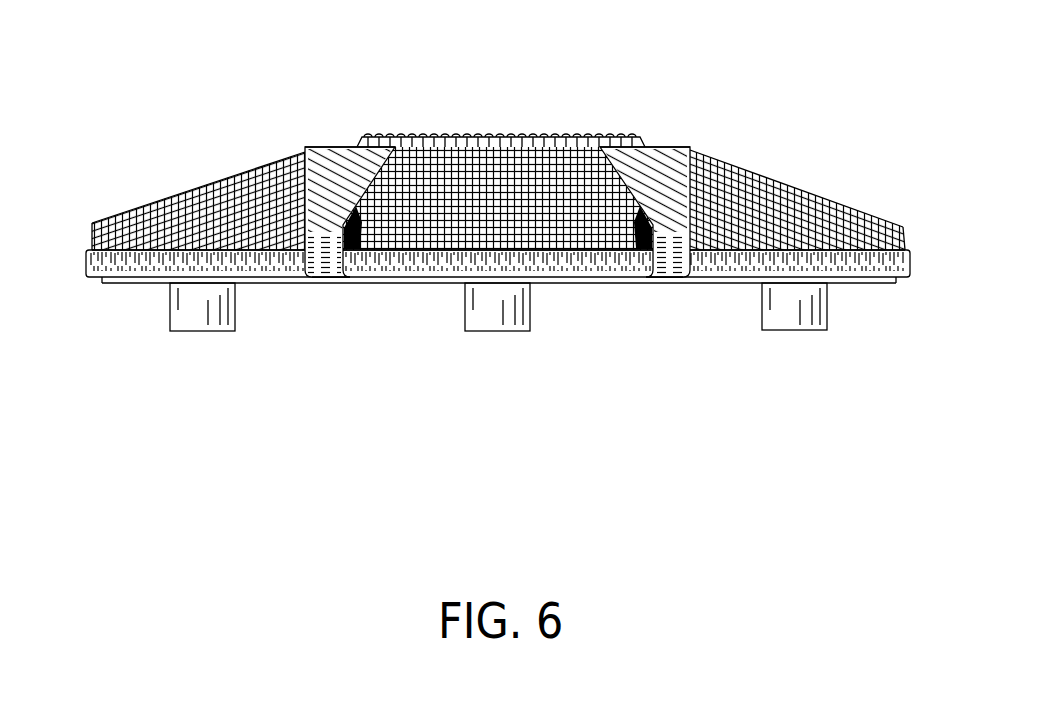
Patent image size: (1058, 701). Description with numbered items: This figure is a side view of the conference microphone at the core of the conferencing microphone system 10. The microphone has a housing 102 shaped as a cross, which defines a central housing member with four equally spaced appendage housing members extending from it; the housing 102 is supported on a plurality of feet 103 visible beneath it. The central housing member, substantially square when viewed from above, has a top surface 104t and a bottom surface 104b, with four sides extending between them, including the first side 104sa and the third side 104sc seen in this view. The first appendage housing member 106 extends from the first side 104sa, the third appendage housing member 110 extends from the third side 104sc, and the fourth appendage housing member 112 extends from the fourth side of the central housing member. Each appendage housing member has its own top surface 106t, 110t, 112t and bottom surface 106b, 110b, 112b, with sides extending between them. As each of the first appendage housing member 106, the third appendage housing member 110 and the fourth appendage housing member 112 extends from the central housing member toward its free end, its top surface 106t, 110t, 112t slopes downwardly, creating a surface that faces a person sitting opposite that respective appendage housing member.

The conferencing microphone system 10 is at (503, 276).
The housing 102 is at (503, 212).
The feet 103 is at (170, 315).
The top surface 104t is at (507, 138).
The bottom surface 104b is at (408, 283).
The first side 104sa is at (270, 163).
The third side 104sc is at (703, 153).
The first appendage housing member 106 is at (191, 227).
The top surface 106t is at (173, 193).
The bottom surface 106b is at (268, 283).
The third appendage housing member 110 is at (811, 225).
The top surface 110t is at (823, 193).
The bottom surface 110b is at (733, 282).
The fourth appendage housing member 112 is at (497, 235).
The top surface 112t is at (415, 143).
The bottom surface 112b is at (580, 283).